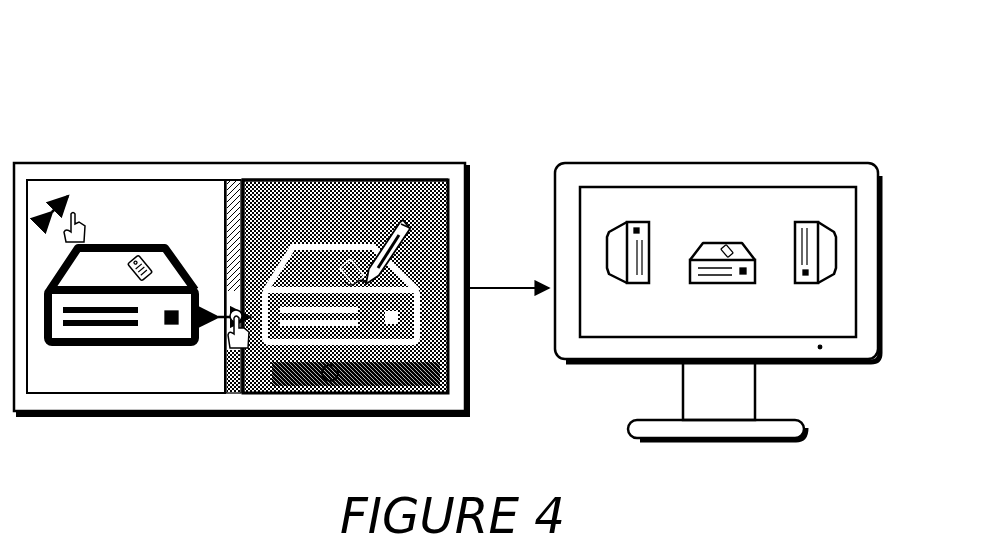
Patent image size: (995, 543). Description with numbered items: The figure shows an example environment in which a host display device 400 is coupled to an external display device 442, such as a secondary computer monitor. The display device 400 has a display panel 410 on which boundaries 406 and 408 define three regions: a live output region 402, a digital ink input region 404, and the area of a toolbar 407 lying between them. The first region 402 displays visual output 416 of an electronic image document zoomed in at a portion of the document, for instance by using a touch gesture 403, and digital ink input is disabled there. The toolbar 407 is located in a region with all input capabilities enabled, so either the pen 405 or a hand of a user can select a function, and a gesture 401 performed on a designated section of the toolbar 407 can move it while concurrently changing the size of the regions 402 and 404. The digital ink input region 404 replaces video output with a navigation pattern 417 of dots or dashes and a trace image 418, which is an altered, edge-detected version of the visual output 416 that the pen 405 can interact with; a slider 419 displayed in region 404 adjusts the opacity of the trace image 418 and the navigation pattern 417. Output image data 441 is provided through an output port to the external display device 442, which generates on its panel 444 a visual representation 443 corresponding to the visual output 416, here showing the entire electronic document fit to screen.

The display device 400 is at (164, 52).
The hand cursor on divider 401 is at (249, 350).
The first region 402 is at (114, 399).
The touch gesture 403 is at (79, 212).
The digital ink input region 404 is at (368, 176).
The pen 405 is at (402, 250).
The boundary 406 is at (247, 185).
The toolbar 407 is at (236, 180).
The boundary 408 is at (226, 182).
The display panel 410 is at (104, 178).
The visual output 416 is at (89, 387).
The navigation pattern 417 is at (428, 198).
The trace image 418 is at (378, 341).
The slider 419 is at (383, 378).
The output image data 441 is at (504, 293).
The external display device 442 is at (689, 110).
The visual representation 443 is at (648, 340).
The panel 444 is at (797, 188).